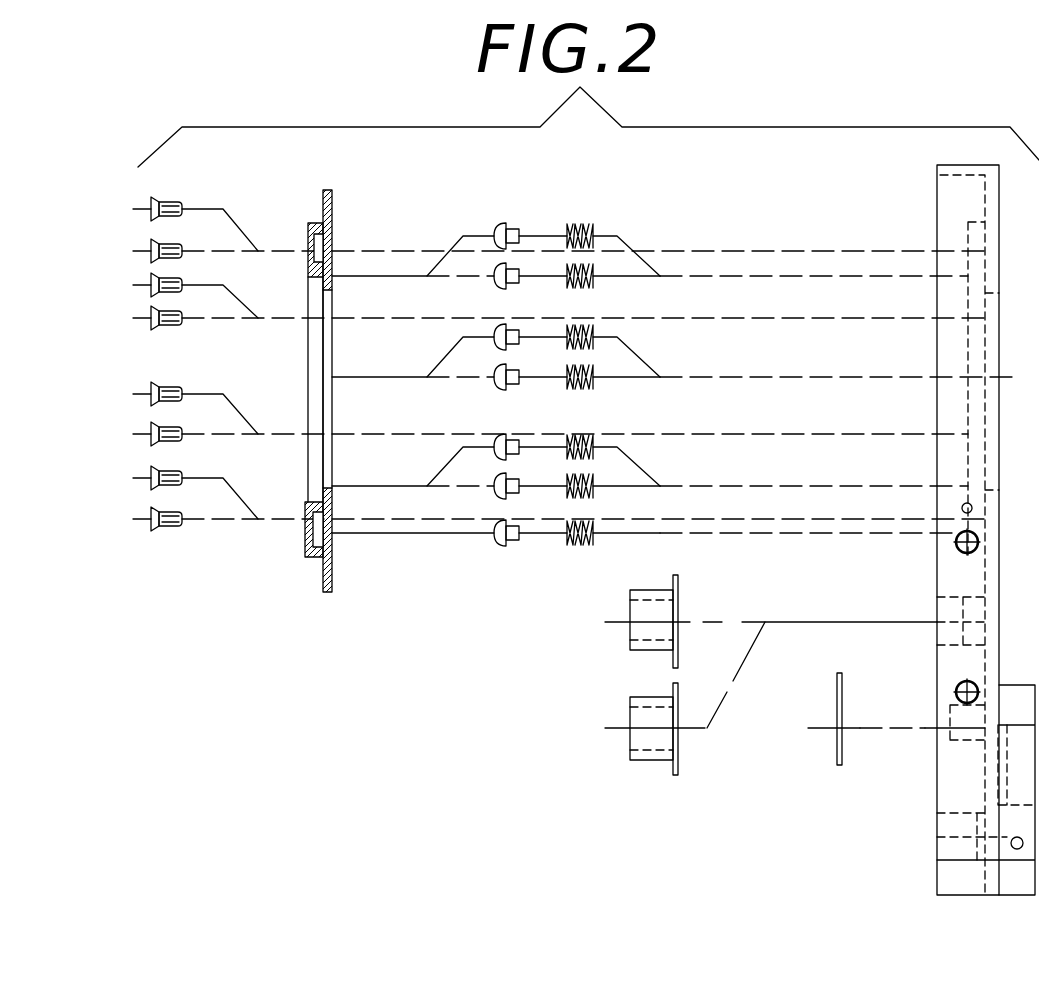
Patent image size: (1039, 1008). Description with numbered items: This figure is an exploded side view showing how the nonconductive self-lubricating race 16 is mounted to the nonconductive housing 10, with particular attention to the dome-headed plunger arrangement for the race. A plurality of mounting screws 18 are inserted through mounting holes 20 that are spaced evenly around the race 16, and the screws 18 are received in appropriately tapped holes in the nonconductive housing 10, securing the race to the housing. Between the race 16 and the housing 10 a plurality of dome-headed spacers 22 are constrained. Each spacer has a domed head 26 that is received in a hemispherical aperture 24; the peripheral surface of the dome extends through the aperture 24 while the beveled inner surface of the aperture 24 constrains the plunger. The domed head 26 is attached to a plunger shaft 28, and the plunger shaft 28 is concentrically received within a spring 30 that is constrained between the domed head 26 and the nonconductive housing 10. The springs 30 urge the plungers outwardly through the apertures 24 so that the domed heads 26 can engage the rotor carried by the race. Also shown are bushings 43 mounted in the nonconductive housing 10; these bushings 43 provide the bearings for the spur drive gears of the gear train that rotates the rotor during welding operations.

The nonconductive housing 10 is at (967, 165).
The nonconductive self-lubricating race 16 is at (326, 592).
The mounting screws 18 is at (170, 205).
The mounting holes 20 is at (310, 245).
The dome-headed spacers 22 is at (515, 229).
The hemispherical apertures 24 is at (305, 533).
The domed head 26 is at (498, 542).
The plunger shaft 28 is at (513, 548).
The springs 30 is at (587, 546).
The bushings 43 is at (647, 760).